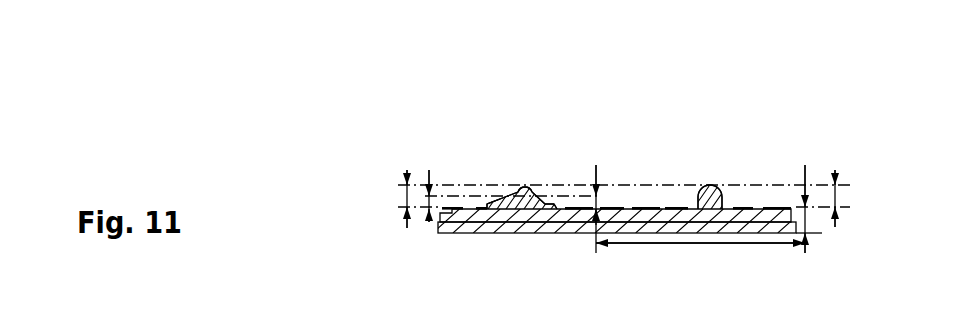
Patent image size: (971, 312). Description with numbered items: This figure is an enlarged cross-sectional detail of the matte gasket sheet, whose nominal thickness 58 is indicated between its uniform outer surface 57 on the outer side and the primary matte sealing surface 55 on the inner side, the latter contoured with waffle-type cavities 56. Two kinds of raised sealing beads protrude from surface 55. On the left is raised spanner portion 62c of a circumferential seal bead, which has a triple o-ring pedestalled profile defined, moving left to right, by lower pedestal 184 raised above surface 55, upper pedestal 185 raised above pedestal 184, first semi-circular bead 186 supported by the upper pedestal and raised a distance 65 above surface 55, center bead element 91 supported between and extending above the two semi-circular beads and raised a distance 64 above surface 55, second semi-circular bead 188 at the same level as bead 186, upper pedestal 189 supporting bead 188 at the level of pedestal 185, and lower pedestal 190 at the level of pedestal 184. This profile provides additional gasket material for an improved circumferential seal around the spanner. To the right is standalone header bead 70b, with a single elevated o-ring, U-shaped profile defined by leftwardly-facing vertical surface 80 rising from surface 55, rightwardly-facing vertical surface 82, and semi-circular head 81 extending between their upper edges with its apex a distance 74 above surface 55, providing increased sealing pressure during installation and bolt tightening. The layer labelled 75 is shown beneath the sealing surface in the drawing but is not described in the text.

The primary matte sealing surface 55 is at (658, 203).
The waffle-type cavities 56 is at (642, 203).
The outer surface 57 is at (713, 237).
The nominal thickness 58 is at (806, 253).
The raised spanner portion 62c is at (515, 117).
The distance 64 is at (406, 228).
The distance 65 is at (622, 245).
The standalone header bead 70b is at (712, 142).
The distance 74 is at (836, 227).
The upper substrate layer 75 is at (435, 213).
The leftwardly-facing vertical surface 80 is at (694, 192).
The semi-circular head 81 is at (714, 186).
The rightwardly-facing vertical surface 82 is at (725, 198).
The center bead element 91 is at (523, 184).
The lower pedestal 184 is at (497, 203).
The upper pedestal 185 is at (488, 203).
The first semi-circular bead 186 is at (505, 190).
The second semi-circular bead 188 is at (540, 188).
The upper pedestal 189 is at (553, 190).
The lower pedestal 190 is at (569, 196).